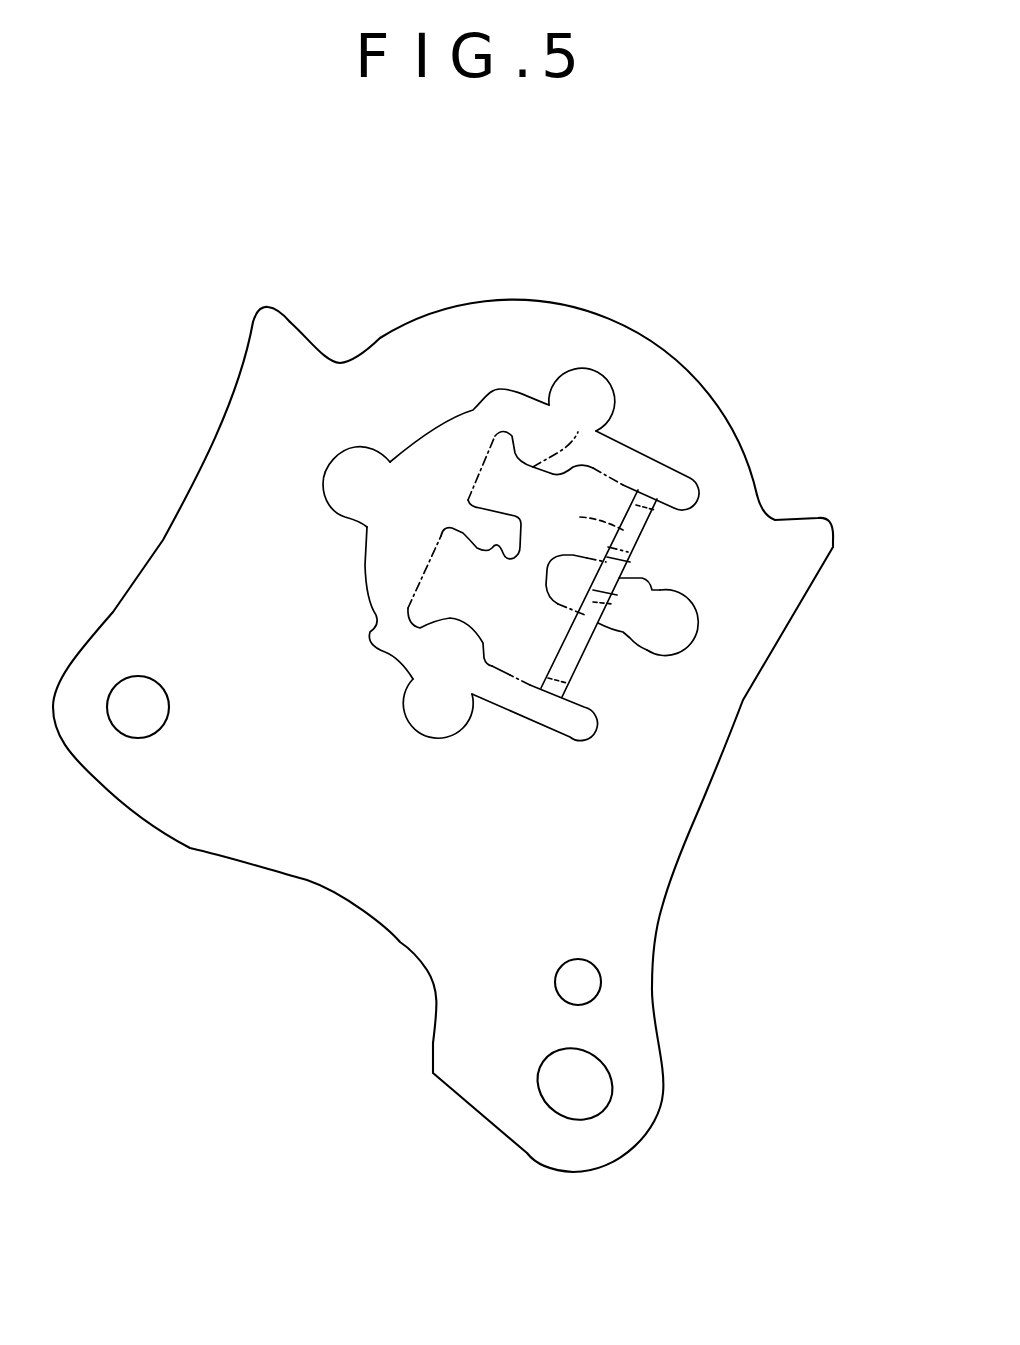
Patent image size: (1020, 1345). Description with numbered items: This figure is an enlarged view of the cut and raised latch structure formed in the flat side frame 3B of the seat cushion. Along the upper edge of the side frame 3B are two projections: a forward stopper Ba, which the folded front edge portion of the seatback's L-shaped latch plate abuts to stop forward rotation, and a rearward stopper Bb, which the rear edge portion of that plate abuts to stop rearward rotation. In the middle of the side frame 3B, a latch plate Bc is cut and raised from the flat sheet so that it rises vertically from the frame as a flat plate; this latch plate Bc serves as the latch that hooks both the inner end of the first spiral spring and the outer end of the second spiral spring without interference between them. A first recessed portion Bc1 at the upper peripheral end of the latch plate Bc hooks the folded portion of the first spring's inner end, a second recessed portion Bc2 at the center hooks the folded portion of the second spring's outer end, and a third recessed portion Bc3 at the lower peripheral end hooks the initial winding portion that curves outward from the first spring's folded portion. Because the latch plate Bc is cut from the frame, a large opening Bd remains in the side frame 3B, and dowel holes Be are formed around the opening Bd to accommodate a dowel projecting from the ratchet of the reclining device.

The side frame 3B is at (677, 395).
The forward stopper Ba is at (270, 335).
The rearward stopper Bb is at (818, 540).
The latch plate Bc is at (632, 541).
The first recessed portion Bc1 is at (575, 441).
The second recessed portion Bc2 is at (495, 560).
The third recessed portion Bc3 is at (453, 633).
The opening Bd is at (430, 482).
The dowel hole Be is at (586, 387).